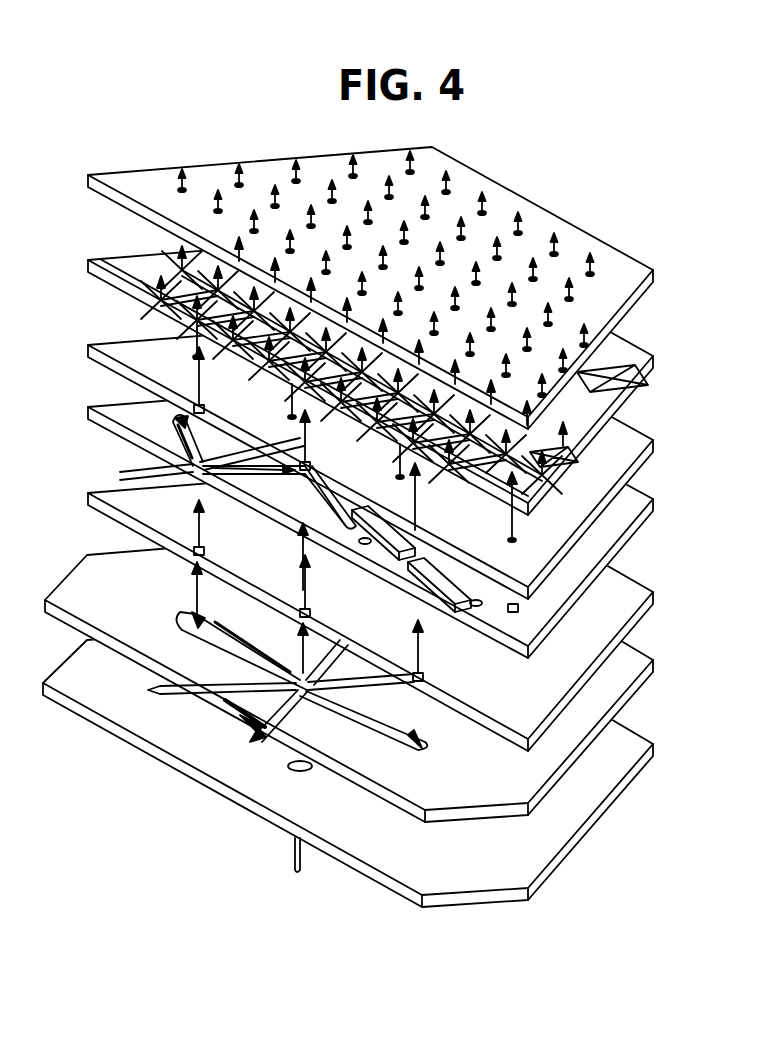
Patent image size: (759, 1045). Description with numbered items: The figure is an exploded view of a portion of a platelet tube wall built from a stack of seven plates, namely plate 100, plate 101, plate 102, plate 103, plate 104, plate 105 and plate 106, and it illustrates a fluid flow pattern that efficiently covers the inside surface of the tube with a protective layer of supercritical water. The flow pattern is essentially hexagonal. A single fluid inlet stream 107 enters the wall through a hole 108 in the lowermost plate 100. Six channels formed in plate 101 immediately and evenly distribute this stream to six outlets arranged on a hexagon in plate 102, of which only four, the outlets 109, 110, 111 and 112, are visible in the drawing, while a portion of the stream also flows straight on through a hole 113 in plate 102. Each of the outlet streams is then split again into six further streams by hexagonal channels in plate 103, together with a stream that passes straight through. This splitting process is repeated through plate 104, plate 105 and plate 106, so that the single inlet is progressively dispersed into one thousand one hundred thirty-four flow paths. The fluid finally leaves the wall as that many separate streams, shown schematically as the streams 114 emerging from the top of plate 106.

The plate 100 is at (658, 745).
The plate 101 is at (658, 663).
The plate 102 is at (658, 594).
The plate 103 is at (660, 505).
The plate 104 is at (660, 445).
The plate 105 is at (660, 360).
The plate 106 is at (660, 273).
The fluid inlet stream 107 is at (294, 856).
The hole 108 is at (292, 760).
The outlet 109 is at (204, 551).
The outlet 110 is at (423, 675).
The outlet 111 is at (366, 547).
The outlet 112 is at (470, 602).
The hole 113 is at (310, 611).
The separate streams 114 is at (452, 180).